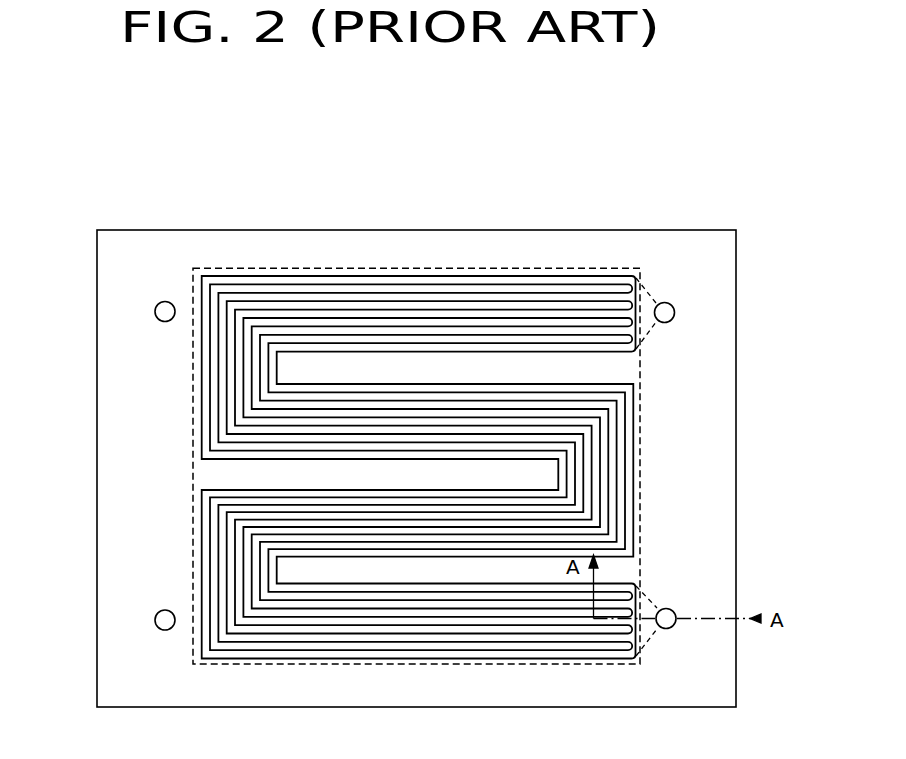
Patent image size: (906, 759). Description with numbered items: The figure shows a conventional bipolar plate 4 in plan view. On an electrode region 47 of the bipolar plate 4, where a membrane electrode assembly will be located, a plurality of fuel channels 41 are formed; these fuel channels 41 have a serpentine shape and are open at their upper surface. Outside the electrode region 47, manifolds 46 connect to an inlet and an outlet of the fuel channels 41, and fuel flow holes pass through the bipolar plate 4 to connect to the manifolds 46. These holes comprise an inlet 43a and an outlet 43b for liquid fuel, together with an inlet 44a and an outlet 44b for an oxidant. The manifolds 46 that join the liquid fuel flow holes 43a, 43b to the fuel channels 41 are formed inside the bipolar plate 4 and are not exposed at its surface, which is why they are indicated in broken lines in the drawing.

The bipolar plate 4 is at (700, 229).
The fuel channels 41 is at (433, 275).
The inlet of liquid fuel 43a is at (675, 312).
The outlet of liquid fuel 43b is at (672, 611).
The inlet of oxidant 44a is at (155, 312).
The outlet of oxidant 44b is at (155, 620).
The manifolds 46 is at (654, 302).
The electrode region 47 is at (262, 268).